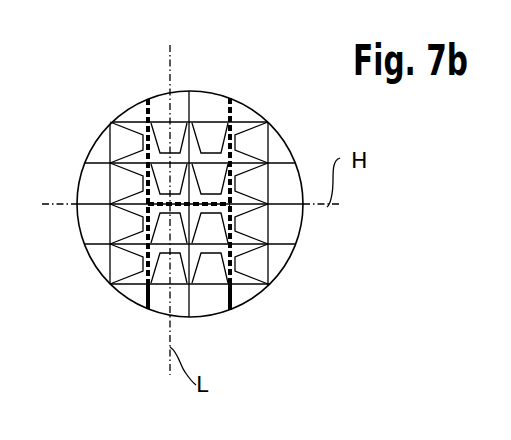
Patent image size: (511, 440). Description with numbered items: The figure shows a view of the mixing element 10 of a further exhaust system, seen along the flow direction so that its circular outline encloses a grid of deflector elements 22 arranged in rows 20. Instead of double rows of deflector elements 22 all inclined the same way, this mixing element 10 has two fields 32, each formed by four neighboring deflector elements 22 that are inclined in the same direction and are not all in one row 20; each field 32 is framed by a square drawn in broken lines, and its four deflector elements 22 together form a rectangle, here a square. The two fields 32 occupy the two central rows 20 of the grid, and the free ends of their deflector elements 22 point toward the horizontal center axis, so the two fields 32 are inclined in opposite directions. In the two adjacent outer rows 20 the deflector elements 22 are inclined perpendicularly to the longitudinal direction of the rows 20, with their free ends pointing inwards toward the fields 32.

The mixing element 10 is at (232, 86).
The rows 20 is at (160, 290).
The deflector elements 22 is at (170, 140).
The fields 32 is at (238, 132).